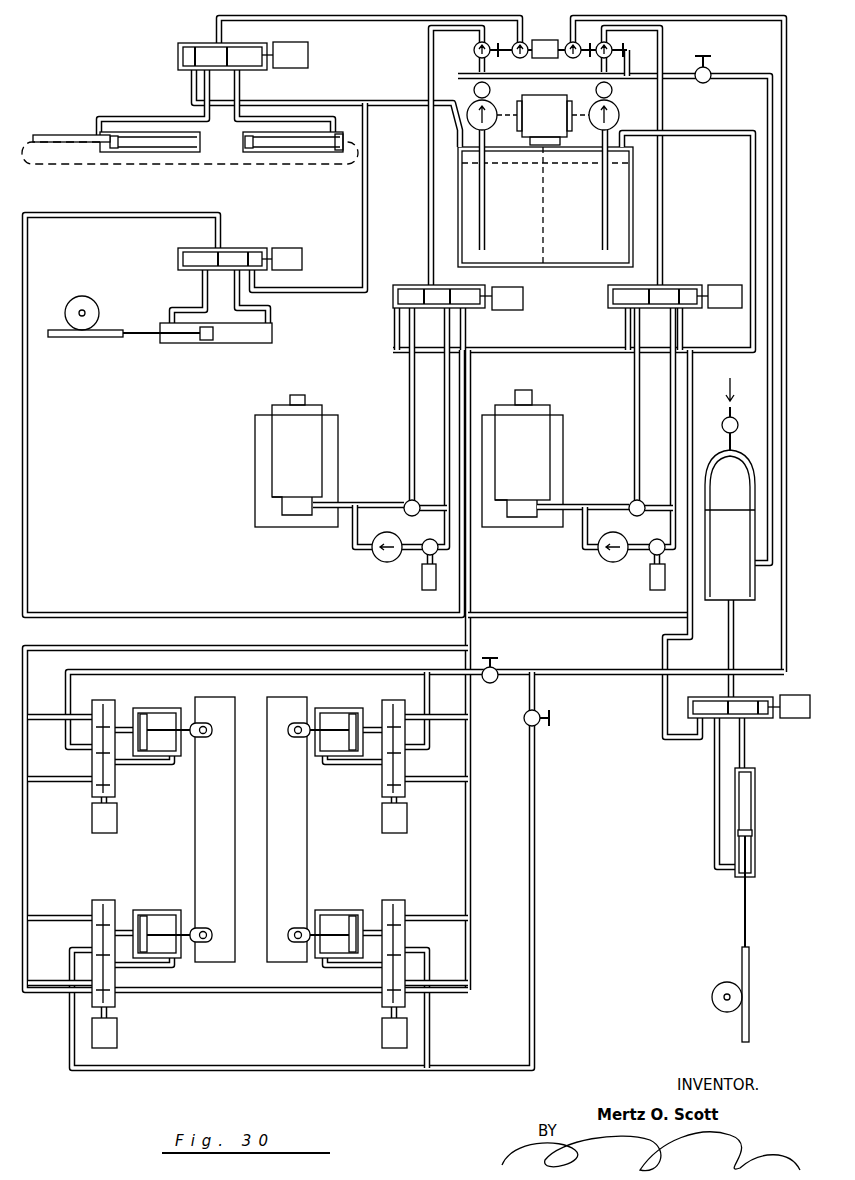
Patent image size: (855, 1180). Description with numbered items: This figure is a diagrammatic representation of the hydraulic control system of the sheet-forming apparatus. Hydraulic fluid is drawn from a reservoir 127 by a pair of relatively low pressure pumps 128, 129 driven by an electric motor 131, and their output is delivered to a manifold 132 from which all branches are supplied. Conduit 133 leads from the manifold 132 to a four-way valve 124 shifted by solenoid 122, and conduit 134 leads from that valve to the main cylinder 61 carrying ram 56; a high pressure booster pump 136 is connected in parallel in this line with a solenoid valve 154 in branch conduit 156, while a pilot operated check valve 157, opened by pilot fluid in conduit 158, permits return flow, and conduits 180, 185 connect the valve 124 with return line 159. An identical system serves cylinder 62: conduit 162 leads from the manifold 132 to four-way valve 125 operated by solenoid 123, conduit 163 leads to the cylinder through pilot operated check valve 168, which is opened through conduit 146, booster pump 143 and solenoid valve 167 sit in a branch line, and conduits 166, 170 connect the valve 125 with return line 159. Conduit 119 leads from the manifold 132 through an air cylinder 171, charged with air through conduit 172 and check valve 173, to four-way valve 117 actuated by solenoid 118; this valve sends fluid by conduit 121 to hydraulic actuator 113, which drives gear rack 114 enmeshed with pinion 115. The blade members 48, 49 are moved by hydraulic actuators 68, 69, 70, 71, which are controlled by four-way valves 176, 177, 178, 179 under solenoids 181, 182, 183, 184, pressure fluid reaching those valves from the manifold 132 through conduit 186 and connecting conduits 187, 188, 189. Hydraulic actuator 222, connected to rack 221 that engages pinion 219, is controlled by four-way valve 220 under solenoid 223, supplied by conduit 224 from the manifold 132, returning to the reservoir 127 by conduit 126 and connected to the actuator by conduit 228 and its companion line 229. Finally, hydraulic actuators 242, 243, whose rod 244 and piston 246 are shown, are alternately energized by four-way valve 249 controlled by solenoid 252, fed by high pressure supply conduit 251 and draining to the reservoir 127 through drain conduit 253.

The blade member 48 is at (195, 850).
The blade member 49 is at (305, 860).
The hydraulic ram 56 is at (304, 398).
The cylinder 61 is at (270, 466).
The cylinder 62 is at (552, 452).
The hydraulic actuator 68 is at (150, 910).
The hydraulic actuator 69 is at (147, 708).
The hydraulic actuator 70 is at (325, 910).
The hydraulic actuator 71 is at (331, 708).
The hydraulic actuator 113 is at (755, 800).
The gear rack 114 is at (750, 980).
The pinion 115 is at (727, 1012).
The four-way valve 117 is at (755, 697).
The solenoid 118 is at (790, 720).
The conduit 119 is at (733, 76).
The conduit 121 is at (715, 795).
The solenoid 122 is at (520, 305).
The solenoid 123 is at (722, 284).
The four-way valve 124 is at (405, 284).
The four-way valve 125 is at (656, 284).
The conduit 126 is at (316, 293).
The reservoir 127 is at (548, 268).
The pump 128 is at (489, 104).
The pump 129 is at (611, 112).
The electric motor 131 is at (554, 123).
The manifold 132 is at (462, 75).
The conduit 133 is at (428, 197).
The conduit 134 is at (445, 405).
The high pressure booster pump 136 is at (380, 560).
The high pressure booster pump 143 is at (606, 560).
The conduit 146 is at (634, 402).
The solenoid valve 154 is at (418, 580).
The branch line conduit 156 is at (353, 534).
The pilot operated check valve 157 is at (404, 505).
The conduit 158 is at (410, 420).
The return line 159 is at (734, 133).
The conduit 162 is at (660, 48).
The conduit 163 is at (672, 410).
The conduit 166 is at (625, 340).
The solenoid valve 167 is at (648, 575).
The pilot operated check valve 168 is at (630, 504).
The conduit 170 is at (690, 332).
The air cylinder 171 is at (733, 460).
The conduit 172 is at (727, 400).
The check valve 173 is at (737, 418).
The four-way valve 176 is at (92, 905).
The four-way valve 177 is at (116, 785).
The four-way valve 178 is at (406, 905).
The four-way valve 179 is at (406, 770).
The conduit 180 is at (396, 340).
The solenoid 181 is at (118, 1033).
The solenoid 182 is at (118, 823).
The solenoid 183 is at (381, 1030).
The solenoid 184 is at (381, 825).
The conduit 185 is at (466, 330).
The conduit 186 is at (628, 680).
The connecting conduit 187 is at (535, 975).
The connecting conduit 188 is at (428, 1025).
The connecting conduit 189 is at (425, 688).
The pinion 219 is at (85, 296).
The four-way valve 220 is at (236, 248).
The rack 221 is at (85, 337).
The hydraulic actuator 222 is at (230, 343).
The solenoid 223 is at (298, 258).
The conduit 224 is at (118, 222).
The conduit 228 is at (272, 325).
The line 229 is at (171, 305).
The hydraulic actuator 242 is at (152, 153).
The hydraulic actuator 243 is at (290, 153).
The piston rod 244 is at (36, 134).
The piston 246 is at (348, 125).
The four-way valve 249 is at (190, 43).
The high pressure fluid supply conduit 251 is at (330, 22).
The solenoid 252 is at (308, 60).
The fluid drain conduit 253 is at (322, 100).